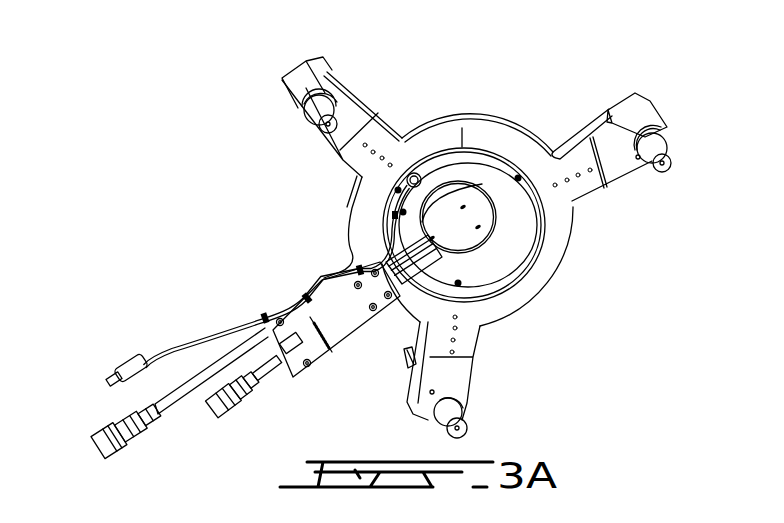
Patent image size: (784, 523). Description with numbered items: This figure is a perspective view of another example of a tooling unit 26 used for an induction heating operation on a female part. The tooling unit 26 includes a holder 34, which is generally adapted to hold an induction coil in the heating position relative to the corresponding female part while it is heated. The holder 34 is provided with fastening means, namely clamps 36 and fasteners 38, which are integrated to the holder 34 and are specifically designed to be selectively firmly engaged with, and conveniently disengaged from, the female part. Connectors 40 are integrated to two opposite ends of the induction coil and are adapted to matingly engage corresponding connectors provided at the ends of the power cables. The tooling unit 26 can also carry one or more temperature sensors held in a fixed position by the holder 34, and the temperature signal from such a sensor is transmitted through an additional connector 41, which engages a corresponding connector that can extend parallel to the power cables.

The tooling unit 26 is at (495, 240).
The holder 34 is at (472, 167).
The clamps 36 is at (300, 102).
The fasteners 38 is at (655, 147).
The connectors 40 is at (118, 422).
The additional connector 41 is at (142, 366).